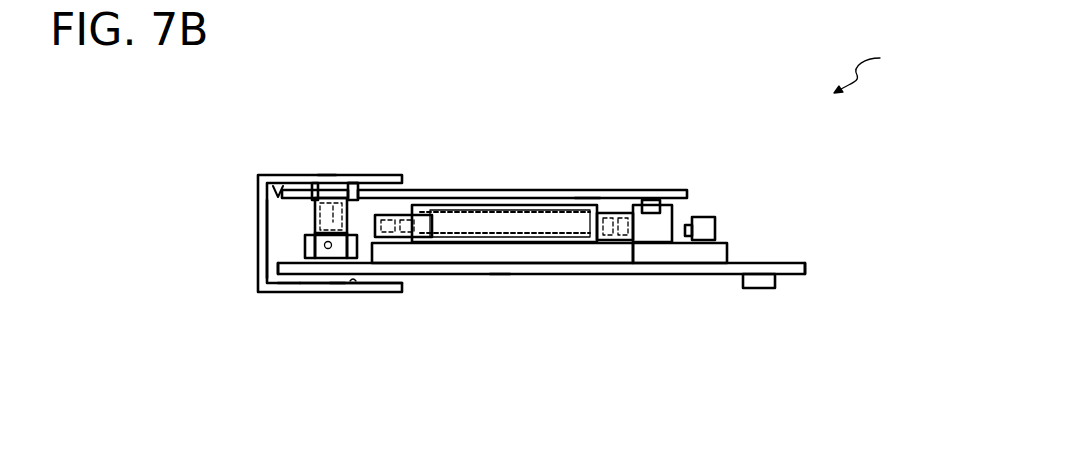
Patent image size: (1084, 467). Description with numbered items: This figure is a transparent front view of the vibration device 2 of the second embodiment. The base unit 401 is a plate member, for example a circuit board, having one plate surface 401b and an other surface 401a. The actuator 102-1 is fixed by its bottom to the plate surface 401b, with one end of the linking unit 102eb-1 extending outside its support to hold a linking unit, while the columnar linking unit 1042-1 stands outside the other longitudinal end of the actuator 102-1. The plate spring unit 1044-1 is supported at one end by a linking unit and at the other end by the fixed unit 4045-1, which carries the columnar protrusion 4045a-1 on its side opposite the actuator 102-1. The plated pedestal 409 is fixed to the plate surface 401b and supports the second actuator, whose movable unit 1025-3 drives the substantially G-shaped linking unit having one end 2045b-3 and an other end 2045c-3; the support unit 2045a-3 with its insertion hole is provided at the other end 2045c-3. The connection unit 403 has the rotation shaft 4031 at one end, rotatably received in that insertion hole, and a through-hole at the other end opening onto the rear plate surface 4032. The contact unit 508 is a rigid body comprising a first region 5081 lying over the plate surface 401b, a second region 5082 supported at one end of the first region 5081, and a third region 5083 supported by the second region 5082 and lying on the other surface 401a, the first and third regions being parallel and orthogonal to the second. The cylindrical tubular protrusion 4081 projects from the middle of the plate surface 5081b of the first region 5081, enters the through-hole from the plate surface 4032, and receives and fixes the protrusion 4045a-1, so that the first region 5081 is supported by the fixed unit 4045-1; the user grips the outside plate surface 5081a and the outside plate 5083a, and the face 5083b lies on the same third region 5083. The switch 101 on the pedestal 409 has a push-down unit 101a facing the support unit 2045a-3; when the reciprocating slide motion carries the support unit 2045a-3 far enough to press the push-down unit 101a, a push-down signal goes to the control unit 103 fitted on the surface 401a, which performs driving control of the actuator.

The vibration device 2 is at (868, 65).
The switch 101 is at (705, 218).
The push-down unit 101a is at (689, 215).
The control unit 103 is at (773, 287).
The actuator 102-1 is at (357, 245).
The linking unit 102eb-1 is at (326, 250).
The linking unit 1042-1 is at (290, 292).
The plate spring unit 1044-1 is at (313, 203).
The movable unit 1025-3 is at (518, 223).
The support unit 2045a-3 is at (668, 218).
The one end of linking unit 2045b-3 is at (403, 212).
The other end of linking unit 2045c-3 is at (627, 225).
The base unit 401 is at (514, 266).
The other surface of base unit 401a is at (497, 274).
The one plate surface of base unit 401b is at (283, 263).
The connection unit 403 is at (450, 190).
The rotation shaft 4031 is at (648, 189).
The plate surface 4032 is at (583, 189).
The fixed unit 4045-1 is at (315, 212).
The protrusion 4045a-1 is at (327, 173).
The cylindrical tubular protrusion 4081 is at (355, 177).
The pedestal 409 is at (432, 252).
The contact unit 508 is at (258, 176).
The first region 5081 is at (372, 177).
The outside plate surface 5081a is at (338, 177).
The plate surface 5081b is at (278, 185).
The second region 5082 is at (262, 273).
The third region 5083 is at (298, 292).
The outside plate 5083a is at (337, 293).
The lower plate second portion 5083b is at (357, 283).